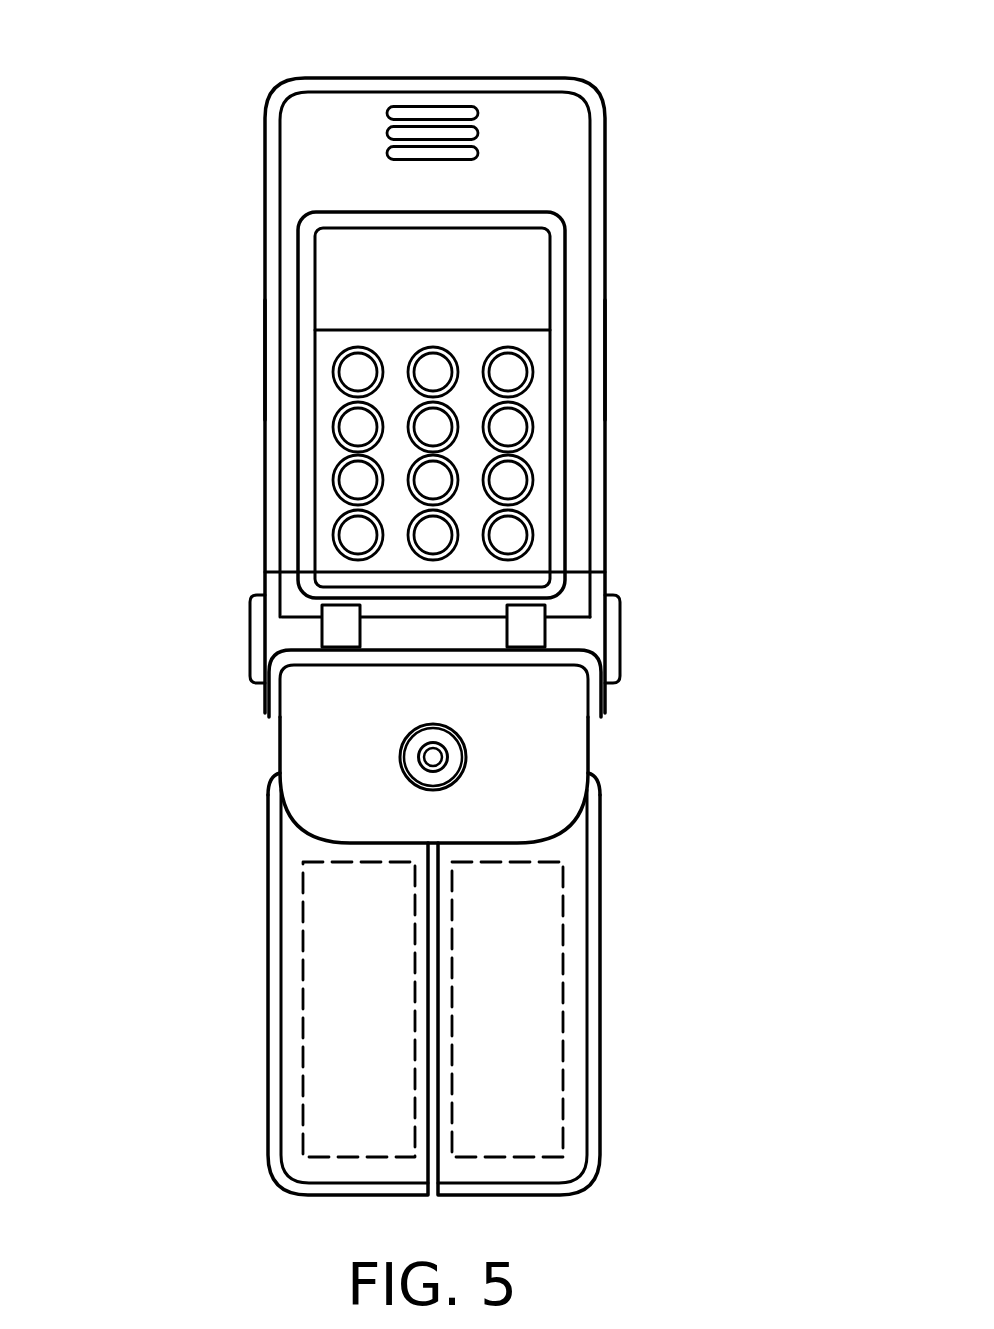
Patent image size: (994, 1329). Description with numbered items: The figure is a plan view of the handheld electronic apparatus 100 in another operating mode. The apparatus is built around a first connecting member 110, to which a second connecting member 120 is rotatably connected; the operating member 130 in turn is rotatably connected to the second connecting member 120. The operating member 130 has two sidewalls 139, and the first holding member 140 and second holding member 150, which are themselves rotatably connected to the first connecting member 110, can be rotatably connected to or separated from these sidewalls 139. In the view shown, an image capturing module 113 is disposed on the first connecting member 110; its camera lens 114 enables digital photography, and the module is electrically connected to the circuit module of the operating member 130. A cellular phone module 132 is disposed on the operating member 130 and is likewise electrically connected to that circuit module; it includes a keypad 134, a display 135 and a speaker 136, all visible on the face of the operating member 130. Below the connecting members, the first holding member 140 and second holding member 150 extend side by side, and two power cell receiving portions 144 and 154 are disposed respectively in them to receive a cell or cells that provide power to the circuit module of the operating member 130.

The handheld electronic apparatus 100 is at (146, 42).
The first connecting member 110 is at (262, 743).
The image capturing module 113 is at (478, 757).
The camera lens 114 is at (441, 752).
The second connecting member 120 is at (240, 638).
The operating member 130 is at (530, 70).
The cellular phone module 132 is at (315, 397).
The keypad 134 is at (328, 483).
The display 135 is at (335, 283).
The speaker 136 is at (395, 133).
The sidewalls 139 is at (265, 355).
The first holding member 140 is at (612, 932).
The power cell receiving portion 144 is at (555, 1007).
The second holding member 150 is at (257, 932).
The power cell receiving portion 154 is at (305, 1007).